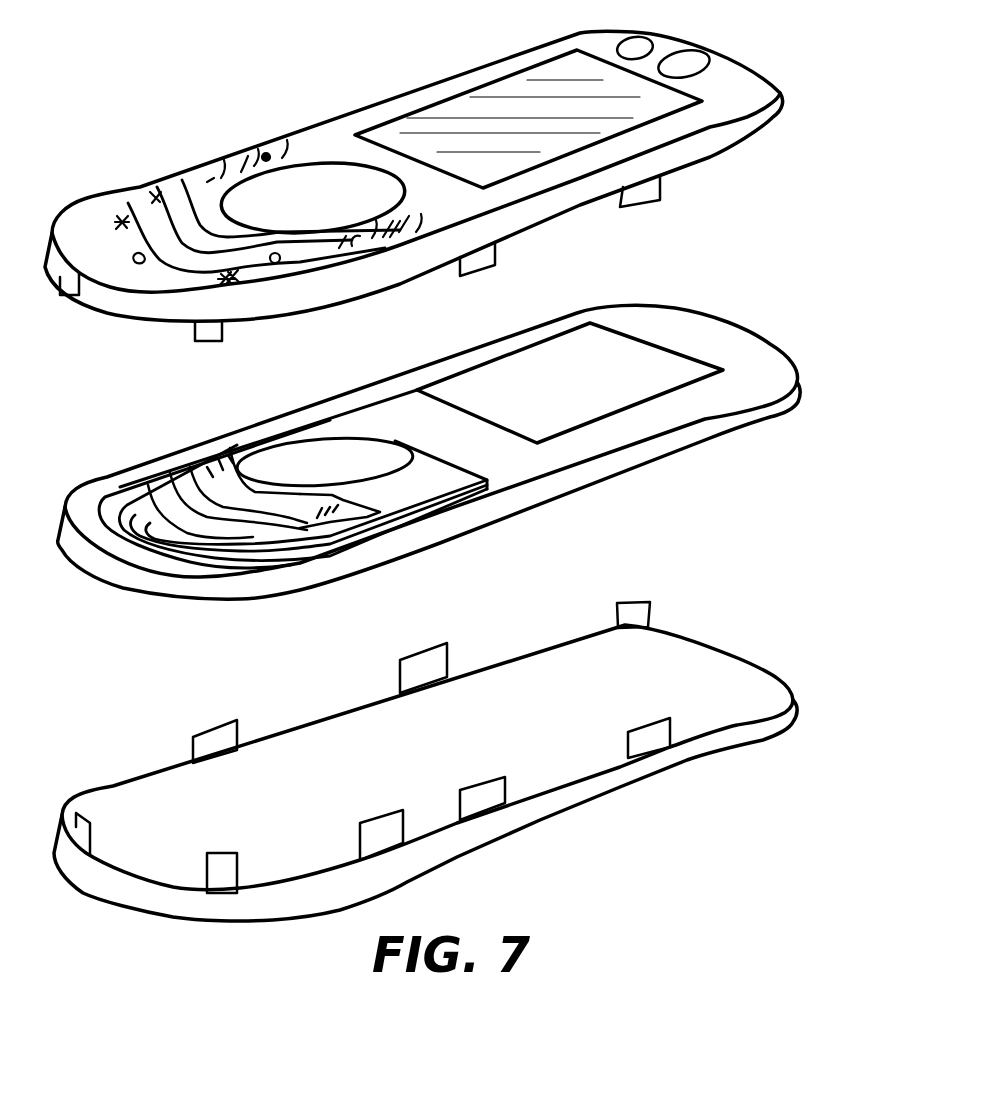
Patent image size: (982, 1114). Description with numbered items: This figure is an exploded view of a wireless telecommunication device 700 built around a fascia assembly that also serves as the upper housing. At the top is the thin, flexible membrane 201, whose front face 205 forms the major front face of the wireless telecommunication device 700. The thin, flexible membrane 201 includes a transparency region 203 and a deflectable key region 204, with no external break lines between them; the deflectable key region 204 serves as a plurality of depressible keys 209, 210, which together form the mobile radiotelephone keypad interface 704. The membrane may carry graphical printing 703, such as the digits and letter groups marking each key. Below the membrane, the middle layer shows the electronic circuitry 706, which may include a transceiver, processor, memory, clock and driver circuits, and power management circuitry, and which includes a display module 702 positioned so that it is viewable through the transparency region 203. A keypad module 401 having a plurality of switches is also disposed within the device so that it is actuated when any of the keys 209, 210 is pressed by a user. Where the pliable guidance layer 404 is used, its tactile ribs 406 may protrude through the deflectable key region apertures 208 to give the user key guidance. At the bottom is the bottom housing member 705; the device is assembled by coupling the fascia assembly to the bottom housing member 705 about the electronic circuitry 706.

The wireless telecommunication device 700 is at (714, 567).
The thin, flexible membrane 201 is at (663, 133).
The transparency region 203 is at (443, 116).
The deflectable key region 204 is at (189, 181).
The front face 205 is at (323, 144).
The deflectable key region apertures 208 is at (213, 252).
The depressible key 209 is at (276, 262).
The depressible key 210 is at (338, 250).
The graphical printing 703 is at (118, 218).
The mobile radiotelephone keypad interface 704 is at (146, 200).
The electronic circuitry 706 is at (429, 452).
The display module 702 is at (635, 363).
The keypad module 401 is at (430, 478).
The tactile ribs 406 is at (153, 500).
The pliable guidance layer 404 is at (305, 502).
The bottom housing member 705 is at (510, 820).